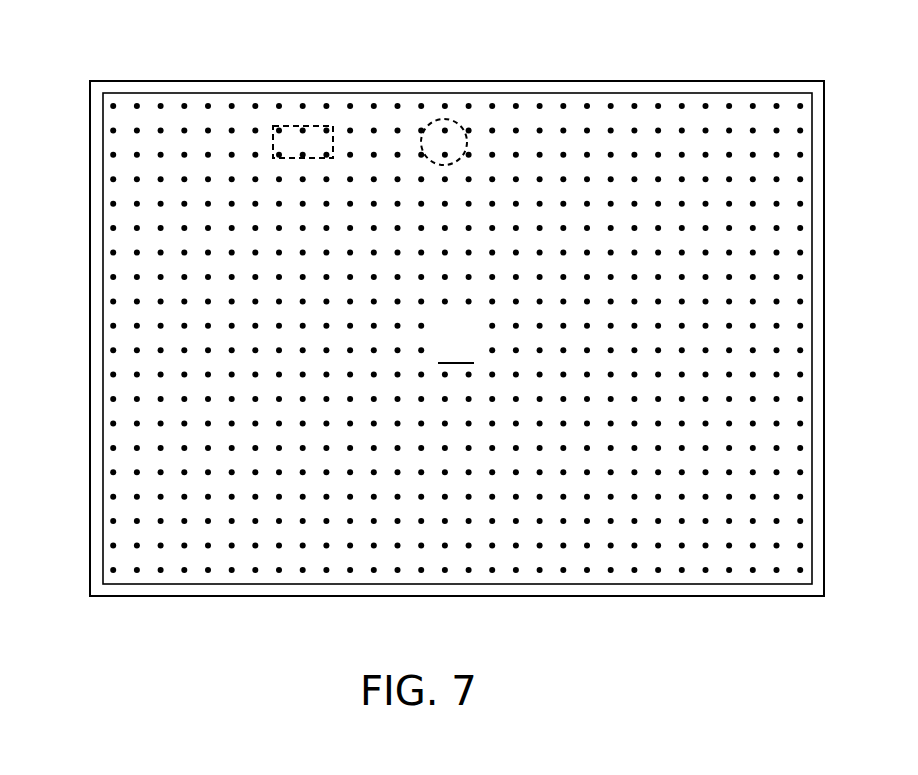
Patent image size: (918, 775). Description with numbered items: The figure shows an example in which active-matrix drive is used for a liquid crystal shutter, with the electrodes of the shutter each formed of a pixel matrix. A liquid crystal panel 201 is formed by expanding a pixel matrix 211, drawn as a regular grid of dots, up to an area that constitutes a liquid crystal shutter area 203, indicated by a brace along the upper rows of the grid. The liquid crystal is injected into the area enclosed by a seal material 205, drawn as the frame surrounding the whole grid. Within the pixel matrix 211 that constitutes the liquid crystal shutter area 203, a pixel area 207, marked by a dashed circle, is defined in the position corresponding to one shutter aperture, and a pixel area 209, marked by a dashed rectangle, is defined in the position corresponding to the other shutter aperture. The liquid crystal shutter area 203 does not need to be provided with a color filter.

The liquid crystal panel 201 is at (82, 182).
The liquid crystal shutter area 203 is at (80, 95).
The seal material 205 is at (670, 80).
The pixel area 207 is at (450, 118).
The pixel area 209 is at (303, 127).
The pixel matrix 211 is at (457, 339).